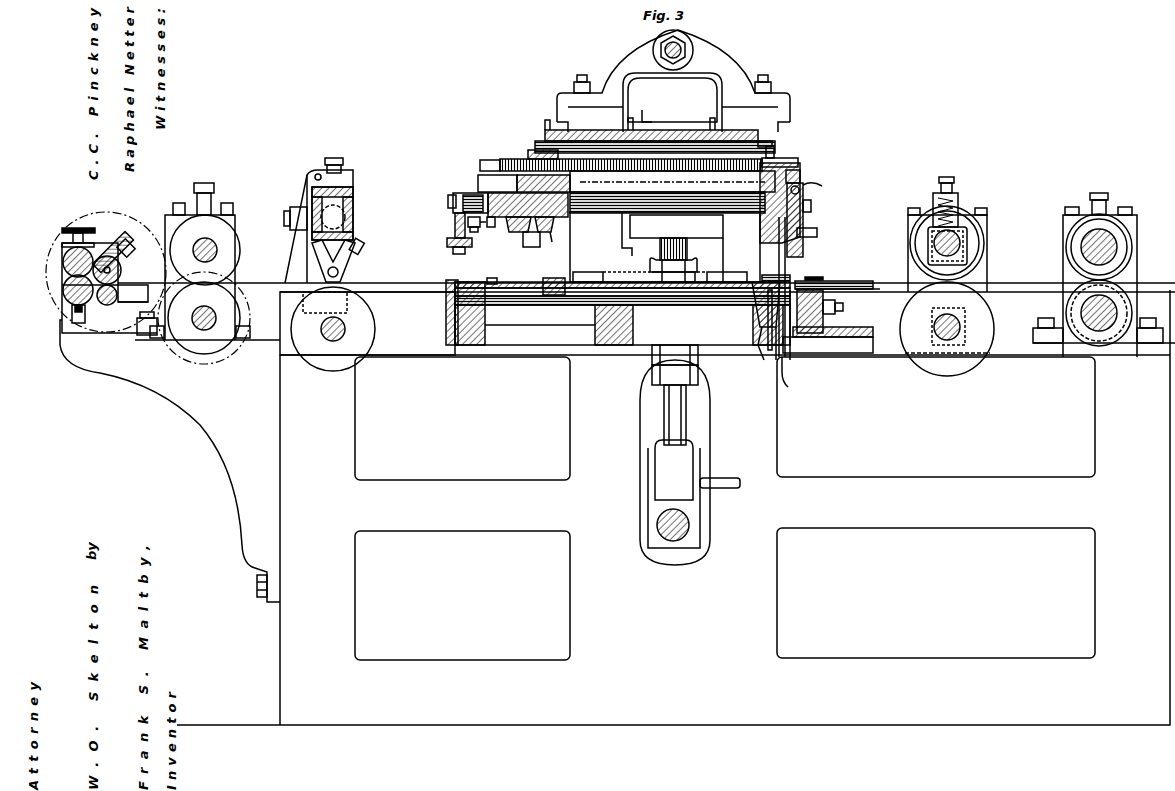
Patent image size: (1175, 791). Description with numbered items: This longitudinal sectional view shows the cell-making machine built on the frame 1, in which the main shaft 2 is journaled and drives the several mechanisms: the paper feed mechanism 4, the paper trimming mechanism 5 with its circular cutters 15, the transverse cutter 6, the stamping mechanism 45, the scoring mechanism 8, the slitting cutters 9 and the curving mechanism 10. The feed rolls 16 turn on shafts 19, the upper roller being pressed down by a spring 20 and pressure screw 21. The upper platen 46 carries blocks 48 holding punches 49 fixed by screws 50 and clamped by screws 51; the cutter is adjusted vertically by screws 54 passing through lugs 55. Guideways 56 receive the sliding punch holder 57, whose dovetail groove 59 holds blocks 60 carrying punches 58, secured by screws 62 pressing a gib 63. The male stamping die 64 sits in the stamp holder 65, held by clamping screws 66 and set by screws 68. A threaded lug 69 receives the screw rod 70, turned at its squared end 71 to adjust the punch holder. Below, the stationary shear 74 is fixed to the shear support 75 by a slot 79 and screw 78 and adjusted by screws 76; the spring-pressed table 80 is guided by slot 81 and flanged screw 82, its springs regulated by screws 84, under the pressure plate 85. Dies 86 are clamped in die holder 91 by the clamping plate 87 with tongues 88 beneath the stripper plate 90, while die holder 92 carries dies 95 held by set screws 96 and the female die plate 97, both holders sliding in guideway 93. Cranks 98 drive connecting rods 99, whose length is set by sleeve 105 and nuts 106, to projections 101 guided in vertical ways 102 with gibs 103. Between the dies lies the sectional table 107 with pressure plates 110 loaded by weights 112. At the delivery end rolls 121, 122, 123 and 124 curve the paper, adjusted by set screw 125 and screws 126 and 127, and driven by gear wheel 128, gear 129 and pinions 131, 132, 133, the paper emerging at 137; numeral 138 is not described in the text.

The frame 1 is at (617, 504).
The main shaft 2 is at (672, 545).
The paper feed mechanism 4 is at (956, 249).
The paper trimming mechanism 5 is at (1104, 275).
The transverse cutting or shearing mechanism 6 is at (801, 287).
The scoring mechanism 8 is at (330, 264).
The slitting or longitudinal cutting mechanism 9 is at (207, 268).
The curving or crimping mechanism 10 is at (122, 270).
The circular cutters 15 is at (1134, 262).
The rolls 16 is at (985, 262).
The shafts 19 is at (962, 328).
The spring 20 is at (960, 214).
The pressure screw 21 is at (954, 181).
The stamping mechanism 45 is at (447, 225).
The upper platen 46 is at (738, 132).
The blocks 48 is at (762, 230).
The punches 49 is at (796, 257).
The screws 50 is at (800, 190).
The clamping screws 51 is at (800, 175).
The screws 54 is at (824, 186).
The lugs 55 is at (813, 206).
The guideways 56 is at (676, 213).
The punch holder 57 is at (552, 230).
The punches 58 is at (532, 248).
The dove-tail groove 59 is at (561, 245).
The blocks 60 is at (520, 233).
The screws 62 is at (480, 230).
The gib 63 is at (496, 227).
The male stamping die 64 is at (459, 254).
The stamp holder 65 is at (447, 244).
The clamping screws 66 is at (448, 201).
The screws 68 is at (484, 240).
The screw threaded lug 69 is at (626, 166).
The screw threaded rod 70 is at (626, 176).
The squared end 71 is at (782, 162).
The stationary shear 74 is at (785, 350).
The shear support 75 is at (850, 328).
The screws 76 is at (800, 345).
The screw 78 is at (762, 350).
The slot 79 is at (793, 378).
The spring pressed table 80 is at (850, 290).
The slot 81 is at (823, 297).
The flanged screw 82 is at (838, 310).
The screws 84 is at (800, 345).
The pressure plate and guide 85 is at (822, 278).
The dies 86 is at (800, 282).
The clamping plate 87 is at (756, 282).
The tongues 88 is at (769, 300).
The stripper plate 90 is at (775, 268).
The die holder 91 is at (758, 325).
The die holder 92 is at (622, 313).
The guide way 93 is at (646, 325).
The dies 95 is at (556, 277).
The set screws 96 is at (497, 274).
The female die plate 97 is at (447, 293).
The cranks 98 is at (690, 512).
The connecting rods 99 is at (686, 410).
The projections 101 is at (665, 247).
The vertical ways 102 is at (614, 256).
The gibs 103 is at (650, 256).
The connecting nut or sleeve 105 is at (700, 352).
The clamping nuts 106 is at (700, 380).
The removable sectional table 107 is at (622, 293).
The paper guide and pressure plates 110 is at (698, 268).
The weight 112 is at (600, 272).
The roll 121 is at (66, 296).
The roll 122 is at (66, 266).
The roll 123 is at (122, 272).
The roll 124 is at (120, 288).
The set screw 125 is at (80, 325).
The adjusting screw 126 is at (66, 228).
The adjusting screw 127 is at (134, 252).
The gear wheel 128 is at (232, 352).
The gear 129 is at (140, 215).
The pinion 131 is at (104, 244).
The pinion 132 is at (108, 305).
The pinion 133 is at (121, 300).
The paper emerging point 137 is at (60, 318).
The base 138 is at (413, 292).